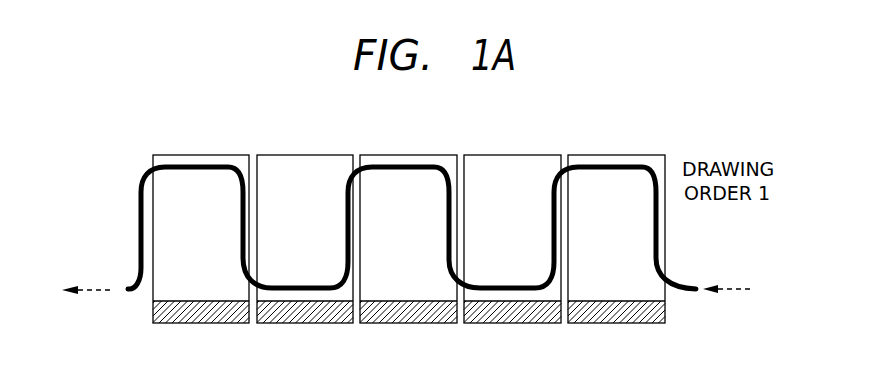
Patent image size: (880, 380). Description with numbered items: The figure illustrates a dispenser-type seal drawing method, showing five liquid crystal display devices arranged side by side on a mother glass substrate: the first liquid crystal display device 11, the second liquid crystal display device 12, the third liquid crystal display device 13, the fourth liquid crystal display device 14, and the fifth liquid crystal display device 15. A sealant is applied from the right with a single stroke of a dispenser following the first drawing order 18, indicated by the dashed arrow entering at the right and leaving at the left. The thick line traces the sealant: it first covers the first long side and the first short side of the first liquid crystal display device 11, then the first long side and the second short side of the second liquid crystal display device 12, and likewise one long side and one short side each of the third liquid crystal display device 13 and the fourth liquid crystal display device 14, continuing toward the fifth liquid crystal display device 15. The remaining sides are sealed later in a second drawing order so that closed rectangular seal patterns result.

The first liquid crystal display device 11 is at (612, 178).
The second liquid crystal display device 12 is at (513, 178).
The third liquid crystal display device 13 is at (407, 178).
The fourth liquid crystal display device 14 is at (304, 178).
The fifth liquid crystal display device 15 is at (203, 178).
The drawing order 1 18 is at (745, 290).